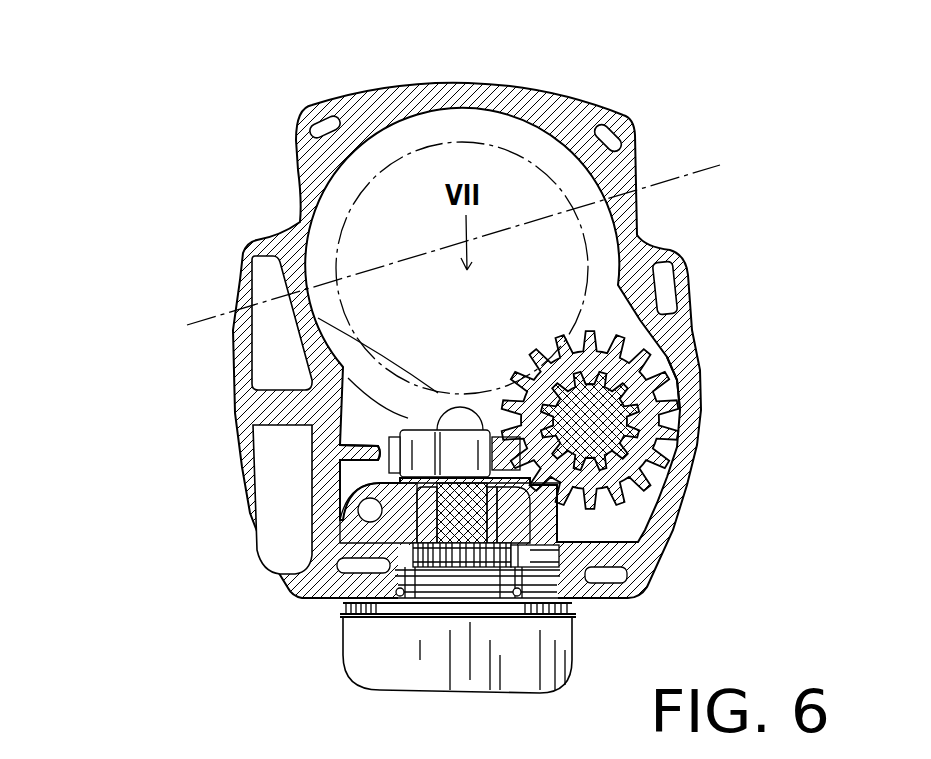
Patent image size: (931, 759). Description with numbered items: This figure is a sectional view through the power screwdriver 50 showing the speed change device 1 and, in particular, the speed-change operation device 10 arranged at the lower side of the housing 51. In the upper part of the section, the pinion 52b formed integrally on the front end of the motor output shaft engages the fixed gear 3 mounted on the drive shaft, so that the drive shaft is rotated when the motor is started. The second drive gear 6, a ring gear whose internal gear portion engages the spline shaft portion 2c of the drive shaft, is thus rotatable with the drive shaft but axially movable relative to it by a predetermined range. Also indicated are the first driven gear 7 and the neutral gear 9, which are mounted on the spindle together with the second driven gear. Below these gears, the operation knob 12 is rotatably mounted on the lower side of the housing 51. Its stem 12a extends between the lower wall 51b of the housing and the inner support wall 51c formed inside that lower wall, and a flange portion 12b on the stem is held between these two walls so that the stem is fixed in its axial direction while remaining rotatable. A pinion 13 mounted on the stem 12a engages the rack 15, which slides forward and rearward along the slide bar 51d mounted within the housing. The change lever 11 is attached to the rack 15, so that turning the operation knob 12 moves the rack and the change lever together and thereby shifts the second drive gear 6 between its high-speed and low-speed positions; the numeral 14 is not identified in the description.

The power screwdriver 50 is at (445, 303).
The housing 51 is at (535, 105).
The pinion 52b is at (440, 392).
The fixed gear 3 is at (653, 313).
The speed change device 1 is at (646, 335).
The second drive gear 6 is at (686, 366).
The spline shaft portion 2c is at (676, 412).
The neutral gear 9 is at (420, 254).
The first driven gear 7 is at (345, 407).
The rack 15 is at (390, 480).
The slide bar 51d is at (345, 516).
The pinion 13 is at (340, 565).
The speed-change operation device 10 is at (462, 648).
The gasket 14 is at (343, 614).
The operation knob 12 is at (556, 672).
The flange portion 12b is at (578, 626).
The stem 12a is at (600, 548).
The lower wall 51b is at (620, 595).
The inner support wall 51c is at (540, 532).
The change lever 11 is at (545, 498).